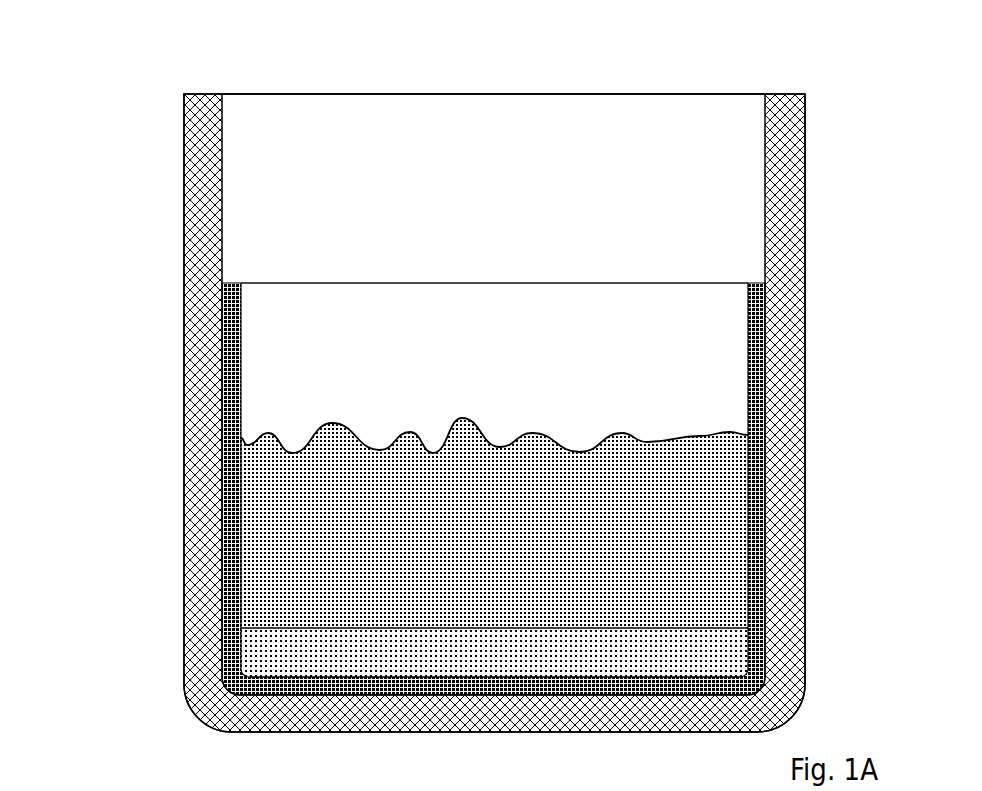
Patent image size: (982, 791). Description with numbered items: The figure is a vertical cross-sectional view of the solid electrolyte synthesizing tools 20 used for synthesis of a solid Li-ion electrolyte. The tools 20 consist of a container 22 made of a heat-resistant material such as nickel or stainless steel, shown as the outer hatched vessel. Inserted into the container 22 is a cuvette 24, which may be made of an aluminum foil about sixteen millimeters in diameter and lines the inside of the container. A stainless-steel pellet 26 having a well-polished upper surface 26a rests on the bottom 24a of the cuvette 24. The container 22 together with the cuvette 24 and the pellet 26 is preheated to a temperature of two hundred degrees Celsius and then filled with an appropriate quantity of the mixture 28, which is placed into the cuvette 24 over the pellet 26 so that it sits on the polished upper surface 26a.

The solid electrolyte synthesizing tools 20 is at (130, 101).
The container 22 is at (190, 307).
The cuvette 24 is at (233, 467).
The bottom of the cuvette 24a is at (673, 675).
The stainless-steel pellet 26 is at (268, 652).
The upper surface of the pellet 26a is at (300, 625).
The mixture 28 is at (637, 487).